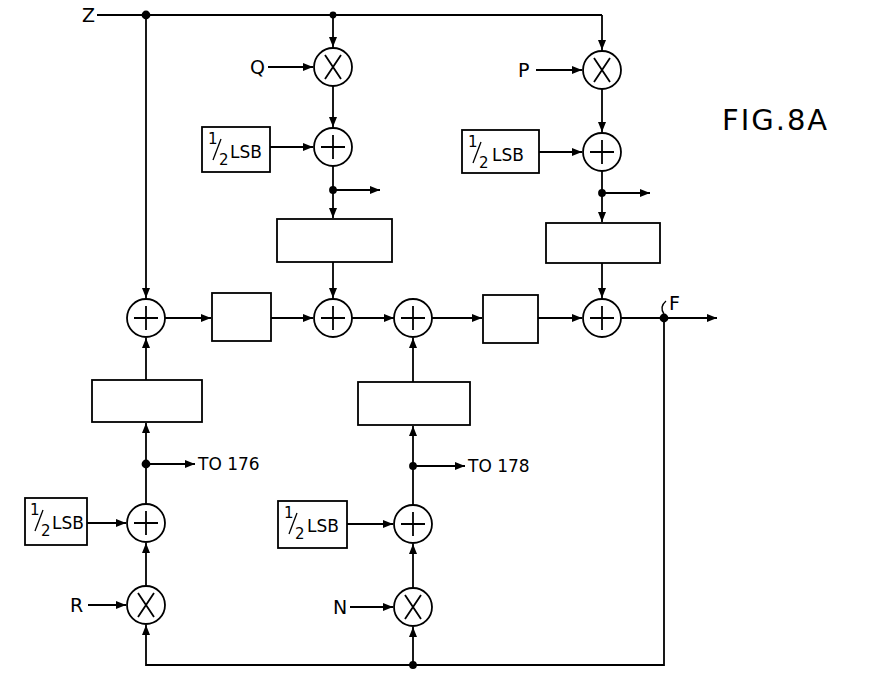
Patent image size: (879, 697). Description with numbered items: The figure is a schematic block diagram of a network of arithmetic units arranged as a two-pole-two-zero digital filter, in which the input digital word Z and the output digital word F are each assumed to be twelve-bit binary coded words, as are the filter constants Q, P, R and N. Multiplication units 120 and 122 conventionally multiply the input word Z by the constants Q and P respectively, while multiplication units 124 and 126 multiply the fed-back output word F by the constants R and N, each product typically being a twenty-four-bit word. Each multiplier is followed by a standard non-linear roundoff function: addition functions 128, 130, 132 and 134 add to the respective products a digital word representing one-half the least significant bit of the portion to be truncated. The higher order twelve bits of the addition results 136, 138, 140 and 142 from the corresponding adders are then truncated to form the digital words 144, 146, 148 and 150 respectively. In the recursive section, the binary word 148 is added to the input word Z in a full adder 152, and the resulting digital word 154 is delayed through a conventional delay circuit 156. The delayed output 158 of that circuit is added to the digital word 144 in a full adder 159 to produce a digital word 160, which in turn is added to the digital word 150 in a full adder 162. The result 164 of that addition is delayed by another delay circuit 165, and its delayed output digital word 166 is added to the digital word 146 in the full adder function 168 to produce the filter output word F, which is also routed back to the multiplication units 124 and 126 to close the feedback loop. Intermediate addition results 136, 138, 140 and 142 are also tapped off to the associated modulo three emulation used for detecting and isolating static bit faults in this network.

The multiplication unit 120 is at (352, 62).
The multiplication unit 122 is at (620, 63).
The multiplication unit 124 is at (163, 598).
The multiplication unit 126 is at (430, 600).
The addition function 128 is at (352, 142).
The addition function 130 is at (620, 144).
The addition function 132 is at (163, 516).
The addition function 134 is at (430, 517).
The addition result 136 is at (336, 186).
The addition result 138 is at (605, 190).
The addition result 140 is at (150, 428).
The addition result 142 is at (416, 430).
The digital word 144 is at (335, 274).
The digital word 146 is at (604, 277).
The binary word 148 is at (148, 368).
The digital word 150 is at (415, 370).
The full adder 152 is at (129, 306).
The digital word 154 is at (186, 316).
The delay circuit 156 is at (253, 292).
The delayed output 158 is at (295, 316).
The full adder 159 is at (329, 336).
The digital word 160 is at (375, 316).
The full adder 162 is at (408, 336).
The result 164 is at (456, 316).
The delay circuit 165 is at (510, 294).
The delayed output digital word 166 is at (562, 316).
The full adder function 168 is at (596, 336).